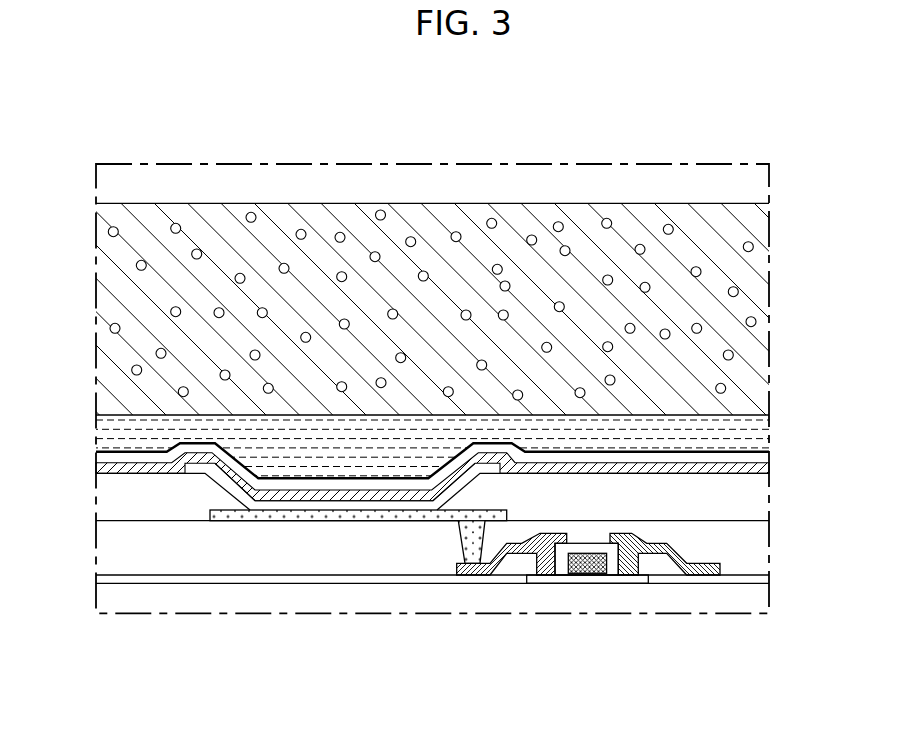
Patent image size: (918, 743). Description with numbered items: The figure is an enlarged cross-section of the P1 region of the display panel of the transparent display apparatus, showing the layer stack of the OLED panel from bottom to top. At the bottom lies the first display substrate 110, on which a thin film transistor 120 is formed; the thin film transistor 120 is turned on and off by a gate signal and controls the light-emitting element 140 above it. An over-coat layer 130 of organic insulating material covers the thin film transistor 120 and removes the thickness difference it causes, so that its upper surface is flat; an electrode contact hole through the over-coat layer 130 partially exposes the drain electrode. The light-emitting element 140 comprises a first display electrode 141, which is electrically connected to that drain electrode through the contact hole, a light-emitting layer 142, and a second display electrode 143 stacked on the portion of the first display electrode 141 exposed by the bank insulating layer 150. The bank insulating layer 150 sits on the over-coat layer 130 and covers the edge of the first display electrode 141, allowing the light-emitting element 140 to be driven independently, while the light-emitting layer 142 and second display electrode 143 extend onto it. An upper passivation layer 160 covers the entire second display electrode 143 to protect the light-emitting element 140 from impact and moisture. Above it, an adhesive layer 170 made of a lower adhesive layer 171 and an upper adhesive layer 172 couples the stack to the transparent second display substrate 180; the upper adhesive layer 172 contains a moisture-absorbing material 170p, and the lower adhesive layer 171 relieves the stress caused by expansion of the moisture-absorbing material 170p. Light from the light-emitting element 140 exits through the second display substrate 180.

The P1 region P1 is at (113, 163).
The first display substrate 110 is at (760, 598).
The thin film transistor 120 is at (577, 586).
The over-coat layer 130 is at (760, 547).
The light-emitting element 140 is at (432, 593).
The first display electrode 141 is at (344, 513).
The light-emitting layer 142 is at (303, 503).
The second display electrode 143 is at (236, 473).
The bank insulating layer 150 is at (760, 497).
The upper passivation layer 160 is at (107, 458).
The adhesive layer 170 is at (459, 339).
The moisture-absorbing material 170p is at (151, 349).
The lower adhesive layer 171 is at (466, 448).
The upper adhesive layer 172 is at (459, 309).
The second display substrate 180 is at (760, 182).